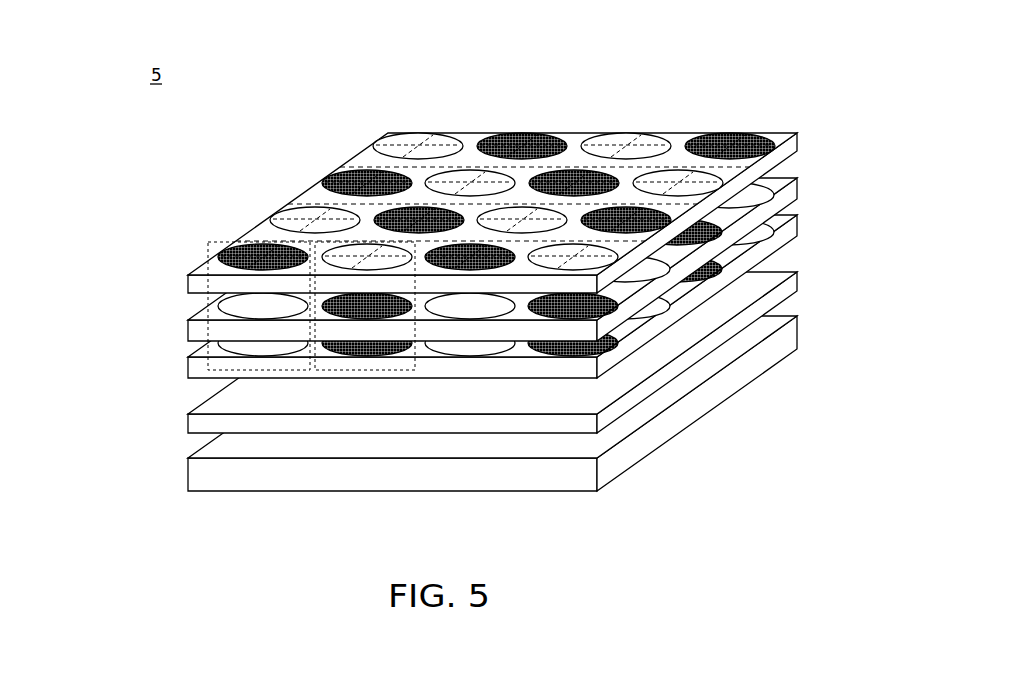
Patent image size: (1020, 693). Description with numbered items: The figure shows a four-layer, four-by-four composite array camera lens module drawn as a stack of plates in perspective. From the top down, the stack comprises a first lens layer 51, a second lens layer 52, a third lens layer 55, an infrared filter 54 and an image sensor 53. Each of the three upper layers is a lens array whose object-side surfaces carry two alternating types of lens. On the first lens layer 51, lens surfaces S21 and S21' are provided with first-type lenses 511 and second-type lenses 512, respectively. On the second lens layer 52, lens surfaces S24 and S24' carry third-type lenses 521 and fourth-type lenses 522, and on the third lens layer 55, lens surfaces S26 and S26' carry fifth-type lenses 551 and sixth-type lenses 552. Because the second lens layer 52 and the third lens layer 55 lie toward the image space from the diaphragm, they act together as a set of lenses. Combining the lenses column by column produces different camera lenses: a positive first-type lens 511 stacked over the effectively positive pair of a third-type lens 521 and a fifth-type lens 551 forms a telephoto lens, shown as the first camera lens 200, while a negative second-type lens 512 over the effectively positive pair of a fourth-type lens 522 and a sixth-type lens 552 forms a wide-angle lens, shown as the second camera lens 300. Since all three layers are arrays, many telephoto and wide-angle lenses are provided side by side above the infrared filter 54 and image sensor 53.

The first lens layer 51 is at (467, 181).
The second lens layer 52 is at (518, 277).
The third lens layer 55 is at (518, 314).
The infrared filter 54 is at (186, 425).
The image sensor 53 is at (186, 478).
The first-type lens 511 is at (560, 243).
The second-type lens 512 is at (647, 208).
The third-type lens 521 is at (540, 318).
The fourth-type lens 522 is at (745, 262).
The fifth-type lens 551 is at (540, 352).
The sixth-type lens 552 is at (740, 298).
The lens surface S21 is at (496, 173).
The lens surface S21' is at (496, 169).
The lens surface S24 is at (496, 279).
The lens surface S24' is at (822, 236).
The lens surface S26 is at (496, 316).
The lens surface S26' is at (819, 276).
The second camera lens 300 is at (252, 378).
The first camera lens 200 is at (348, 378).